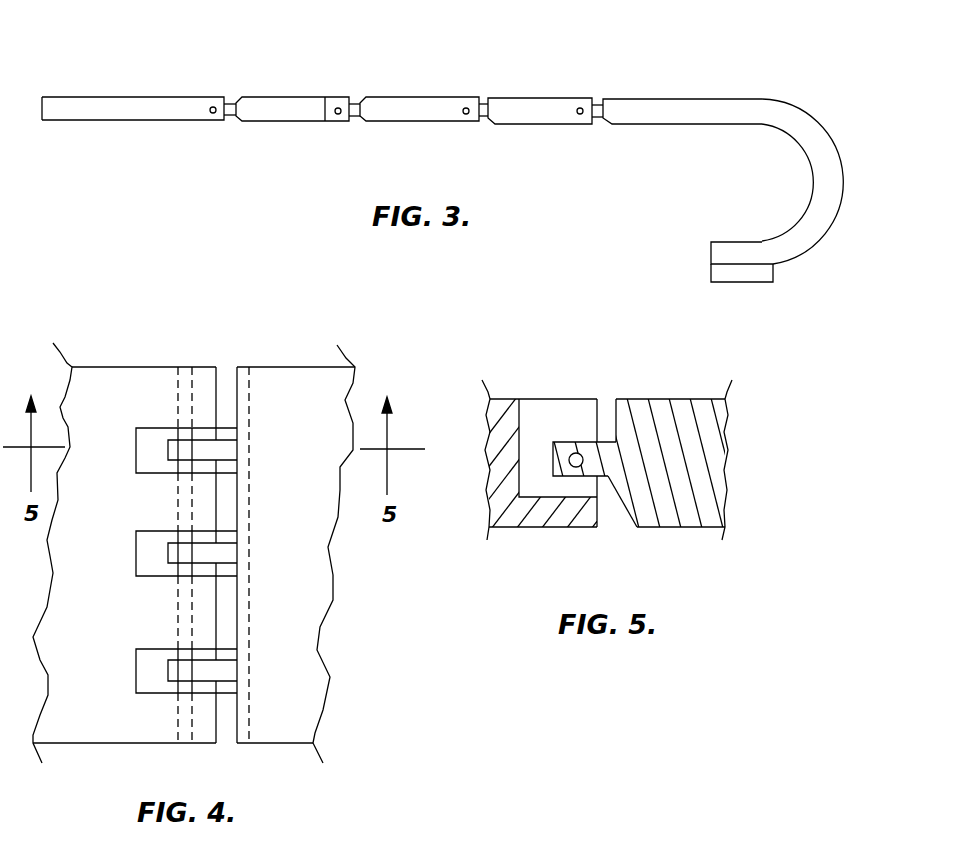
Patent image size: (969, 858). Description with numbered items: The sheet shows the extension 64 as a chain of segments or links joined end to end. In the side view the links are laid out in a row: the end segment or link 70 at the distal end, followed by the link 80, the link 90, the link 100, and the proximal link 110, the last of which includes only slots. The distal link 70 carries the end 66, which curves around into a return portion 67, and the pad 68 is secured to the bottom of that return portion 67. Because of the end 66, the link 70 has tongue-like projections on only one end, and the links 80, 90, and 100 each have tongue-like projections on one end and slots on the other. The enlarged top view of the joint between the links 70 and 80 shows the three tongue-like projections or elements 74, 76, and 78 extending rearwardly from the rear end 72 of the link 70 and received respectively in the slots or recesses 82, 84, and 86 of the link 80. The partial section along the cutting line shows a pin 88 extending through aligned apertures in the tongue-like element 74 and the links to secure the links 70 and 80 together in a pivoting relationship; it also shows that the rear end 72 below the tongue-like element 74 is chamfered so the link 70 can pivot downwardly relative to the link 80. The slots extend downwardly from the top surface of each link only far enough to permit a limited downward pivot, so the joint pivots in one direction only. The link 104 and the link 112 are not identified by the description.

In FIG. 3, the extension 64 is at (556, 78).
In FIG. 4, the extension 64 is at (192, 310).
In FIG. 5, the extension 64 is at (590, 357).
In FIG. 3, the end 66 is at (837, 145).
In FIG. 3, the return portion 67 is at (733, 242).
In FIG. 3, the pad 68 is at (738, 282).
In FIG. 3, the end segment or link 70 is at (677, 98).
In FIG. 4, the end segment or link 70 is at (303, 367).
In FIG. 5, the end segment or link 70 is at (672, 399).
In FIG. 4, the rear end 72 is at (233, 384).
In FIG. 5, the rear end 72 is at (620, 507).
In FIG. 4, the tongue-like projection or element 74 is at (193, 450).
In FIG. 5, the tongue-like projection or element 74 is at (607, 440).
In FIG. 4, the tongue-like projection or element 76 is at (193, 555).
In FIG. 4, the tongue-like projection or element 78 is at (190, 668).
In FIG. 3, the link 80 is at (520, 122).
In FIG. 4, the link 80 is at (145, 367).
In FIG. 5, the link 80 is at (508, 399).
In FIG. 4, the slot or recess 82 is at (137, 455).
In FIG. 5, the slot or recess 82 is at (519, 418).
In FIG. 4, the slot or recess 84 is at (137, 557).
In FIG. 4, the slot or recess 86 is at (137, 675).
In FIG. 5, the pin 88 is at (572, 468).
In FIG. 3, the link 90 is at (412, 97).
In FIG. 3, the link 100 is at (282, 97).
In FIG. 3, the joint line 104 is at (328, 117).
In FIG. 3, the link 110 is at (117, 97).
In FIG. 3, the distal end 112 is at (40, 106).